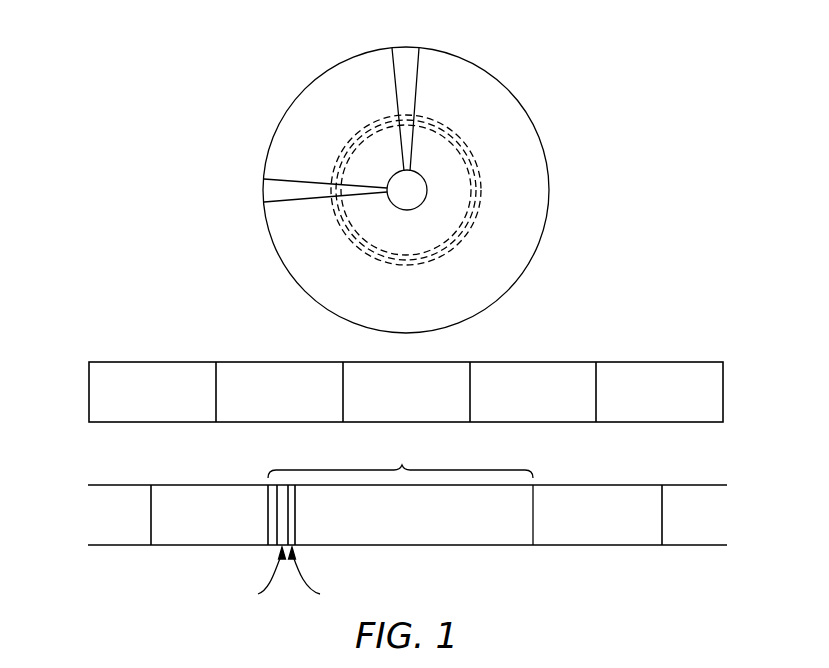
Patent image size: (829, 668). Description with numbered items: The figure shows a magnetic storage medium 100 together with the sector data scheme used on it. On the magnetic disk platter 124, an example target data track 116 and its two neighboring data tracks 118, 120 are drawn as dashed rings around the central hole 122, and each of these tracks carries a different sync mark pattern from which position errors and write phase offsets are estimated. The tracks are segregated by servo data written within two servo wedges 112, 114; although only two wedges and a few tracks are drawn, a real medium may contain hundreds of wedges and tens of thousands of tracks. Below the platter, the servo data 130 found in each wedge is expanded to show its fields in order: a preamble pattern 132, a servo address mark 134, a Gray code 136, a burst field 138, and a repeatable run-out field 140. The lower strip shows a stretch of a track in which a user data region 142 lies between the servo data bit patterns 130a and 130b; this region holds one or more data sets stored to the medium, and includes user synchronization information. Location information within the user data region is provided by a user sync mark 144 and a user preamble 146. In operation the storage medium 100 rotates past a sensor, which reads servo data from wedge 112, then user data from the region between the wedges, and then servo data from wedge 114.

The magnetic storage medium 100 is at (407, 173).
The servo wedge 112 is at (263, 190).
The servo wedge 114 is at (407, 47).
The target data track 116 is at (478, 205).
The neighboring data track 118 is at (470, 235).
The neighboring data track 120 is at (473, 172).
The spindle hole 122 is at (409, 211).
The magnetic disk platter 124 is at (548, 225).
The servo data 130 is at (406, 357).
The servo data bit pattern 130a is at (185, 541).
The servo data bit pattern 130b is at (574, 541).
The preamble pattern 132 is at (134, 419).
The servo address mark 134 is at (261, 419).
The Gray code 136 is at (388, 419).
The burst field 138 is at (514, 419).
The repeatable run-out (RRO) field 140 is at (641, 419).
The user data region 142 is at (460, 450).
The user sync mark 144 is at (471, 590).
The user preamble 146 is at (117, 590).